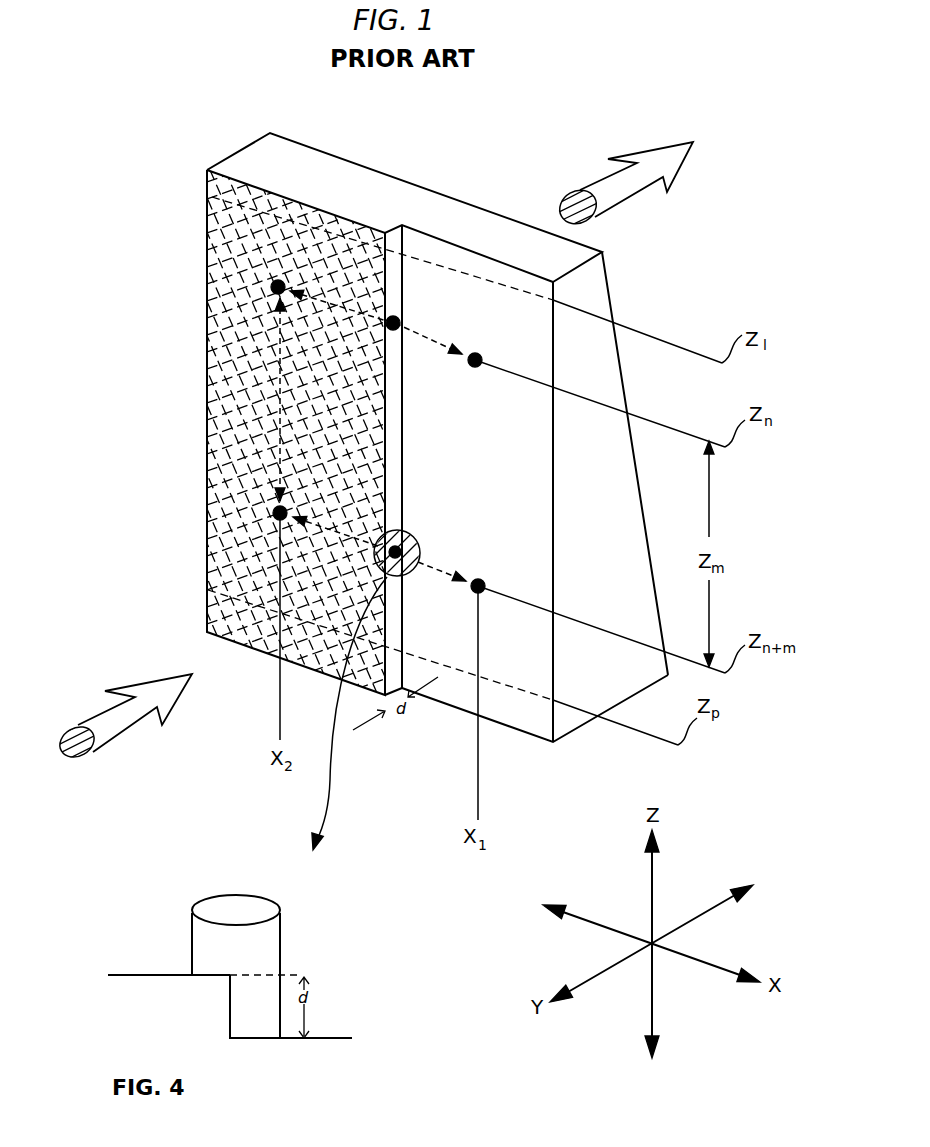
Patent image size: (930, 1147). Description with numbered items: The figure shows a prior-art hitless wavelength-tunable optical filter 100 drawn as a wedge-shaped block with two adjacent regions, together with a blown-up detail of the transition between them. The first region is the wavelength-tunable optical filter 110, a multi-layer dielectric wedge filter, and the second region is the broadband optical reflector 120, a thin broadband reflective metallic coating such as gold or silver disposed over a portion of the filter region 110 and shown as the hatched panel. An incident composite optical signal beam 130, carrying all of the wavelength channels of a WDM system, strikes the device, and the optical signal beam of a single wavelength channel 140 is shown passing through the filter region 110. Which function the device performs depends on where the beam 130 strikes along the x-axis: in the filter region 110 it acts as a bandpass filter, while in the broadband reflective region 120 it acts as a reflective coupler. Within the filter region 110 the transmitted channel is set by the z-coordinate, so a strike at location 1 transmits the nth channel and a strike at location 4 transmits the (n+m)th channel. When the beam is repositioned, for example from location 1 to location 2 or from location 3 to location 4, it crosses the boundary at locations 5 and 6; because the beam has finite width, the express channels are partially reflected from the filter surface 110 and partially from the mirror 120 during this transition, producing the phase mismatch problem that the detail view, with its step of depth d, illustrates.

In FIG. 1, the hitless wavelength-tunable optical filter 100 is at (407, 165).
In FIG. 1, the wavelength-tunable optical filter 110 is at (595, 277).
In FIG. 4, the wavelength-tunable optical filter 110 is at (340, 1038).
In FIG. 1, the broadband optical reflector 120 is at (218, 425).
In FIG. 4, the broadband optical reflector 120 is at (142, 975).
In FIG. 1, the incident composite optical signal beam 130 is at (117, 735).
In FIG. 4, the incident composite optical signal beam 130 is at (268, 937).
In FIG. 1, the optical signal beam of a single wavelength channel 140 is at (687, 173).
In FIG. 1, the location 1 is at (483, 355).
In FIG. 1, the location 2 is at (276, 283).
In FIG. 1, the location 3 is at (276, 518).
In FIG. 1, the location 4 is at (484, 582).
In FIG. 1, the location 5 is at (400, 543).
In FIG. 1, the location 6 is at (398, 330).